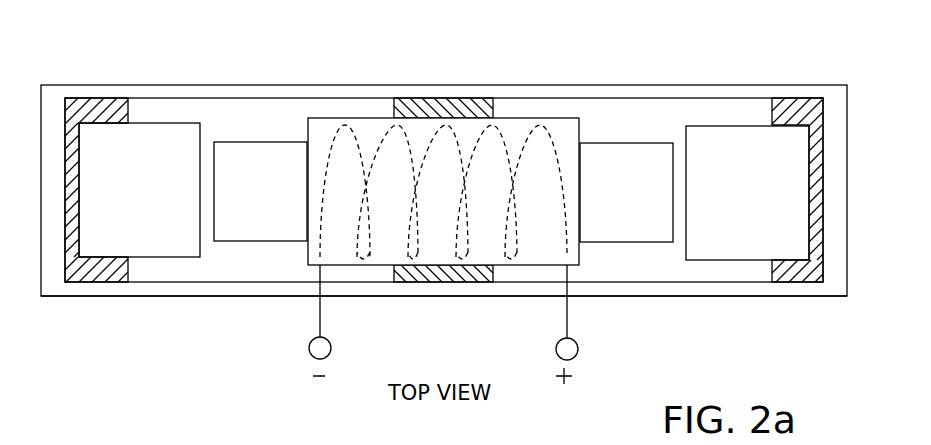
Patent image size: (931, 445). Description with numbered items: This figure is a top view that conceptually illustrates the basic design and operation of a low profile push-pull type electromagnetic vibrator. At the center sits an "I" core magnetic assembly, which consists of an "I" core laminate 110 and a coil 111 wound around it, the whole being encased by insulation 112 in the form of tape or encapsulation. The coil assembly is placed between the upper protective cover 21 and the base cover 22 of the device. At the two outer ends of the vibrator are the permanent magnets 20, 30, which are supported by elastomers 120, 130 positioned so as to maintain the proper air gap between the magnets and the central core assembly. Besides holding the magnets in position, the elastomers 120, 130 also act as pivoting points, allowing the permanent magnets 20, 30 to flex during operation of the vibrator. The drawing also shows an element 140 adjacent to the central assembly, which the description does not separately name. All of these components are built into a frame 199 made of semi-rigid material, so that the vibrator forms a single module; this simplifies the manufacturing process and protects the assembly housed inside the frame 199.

The permanent magnet 20 is at (171, 150).
The upper protective cover 21 is at (699, 98).
The base cover 22 is at (500, 290).
The permanent magnet 30 is at (755, 235).
The "I" core laminate 110 is at (290, 197).
The coil 111 is at (462, 148).
The insulation 112 is at (522, 120).
The elastomer 120 is at (95, 260).
The elastomer 130 is at (787, 112).
The spacer 140 is at (394, 100).
The frame 199 is at (181, 290).